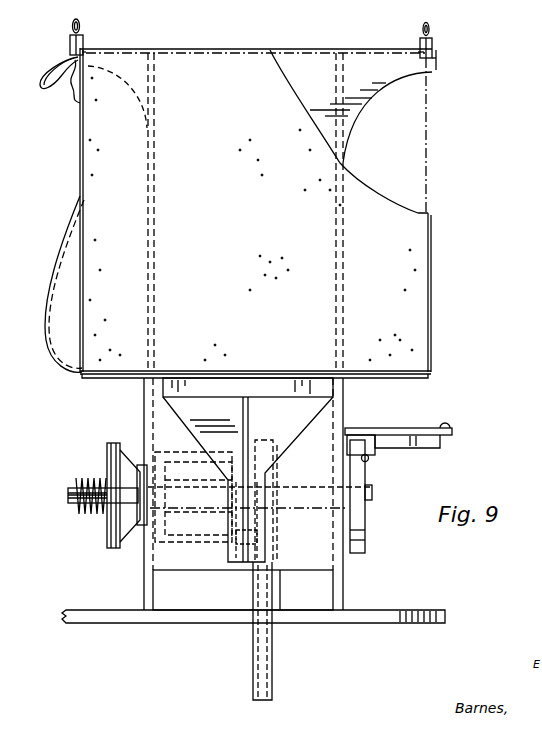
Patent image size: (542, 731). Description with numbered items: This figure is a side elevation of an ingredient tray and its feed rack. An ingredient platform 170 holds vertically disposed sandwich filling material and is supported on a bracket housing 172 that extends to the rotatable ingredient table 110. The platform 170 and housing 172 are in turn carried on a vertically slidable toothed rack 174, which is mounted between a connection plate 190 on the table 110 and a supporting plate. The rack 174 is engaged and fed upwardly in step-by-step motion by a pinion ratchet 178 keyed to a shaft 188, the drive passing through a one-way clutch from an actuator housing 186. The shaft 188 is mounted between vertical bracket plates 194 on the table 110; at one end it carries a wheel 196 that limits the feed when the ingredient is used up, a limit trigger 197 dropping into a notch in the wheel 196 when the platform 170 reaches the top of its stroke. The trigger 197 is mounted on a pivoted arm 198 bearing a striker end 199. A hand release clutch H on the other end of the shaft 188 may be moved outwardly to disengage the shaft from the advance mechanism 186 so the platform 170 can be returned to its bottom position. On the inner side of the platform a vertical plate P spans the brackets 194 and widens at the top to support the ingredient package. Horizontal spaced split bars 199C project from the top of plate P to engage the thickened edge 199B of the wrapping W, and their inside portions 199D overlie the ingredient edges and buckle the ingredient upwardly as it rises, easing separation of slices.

The wrapping W is at (80, 104).
The vertical plate P is at (339, 130).
The split bars 199C is at (83, 48).
The inside of the bars 199D is at (84, 50).
The thickened edge 199B is at (432, 32).
The ingredient platform 170 is at (84, 216).
The vertical bracket plates 194 is at (150, 284).
The bracket housing 172 is at (180, 404).
The pinion ratchet 178 is at (297, 424).
The actuator housing 186 is at (163, 540).
The hand release clutch H is at (108, 454).
The shaft 188 is at (72, 497).
The pivoted arm 198 is at (415, 432).
The striker end 199 is at (448, 426).
The limit trigger 197 is at (369, 460).
The wheel 196 is at (365, 536).
The connection plate 190 is at (192, 600).
The ingredient table 110 is at (333, 622).
The toothed rack 174 is at (273, 662).